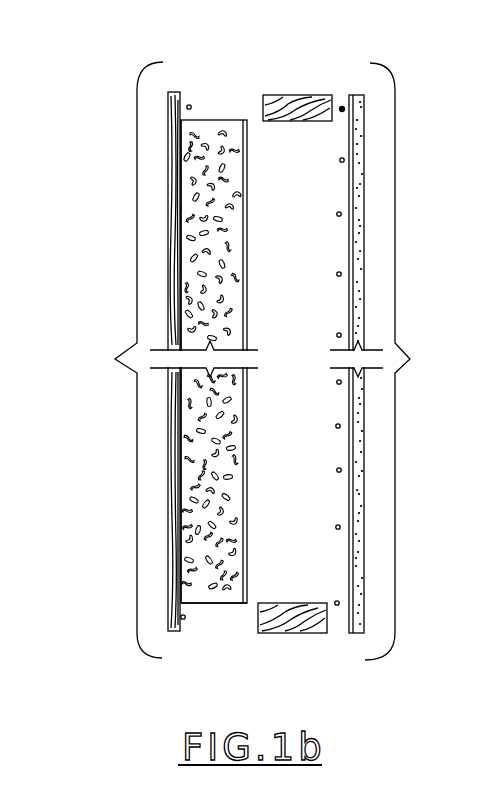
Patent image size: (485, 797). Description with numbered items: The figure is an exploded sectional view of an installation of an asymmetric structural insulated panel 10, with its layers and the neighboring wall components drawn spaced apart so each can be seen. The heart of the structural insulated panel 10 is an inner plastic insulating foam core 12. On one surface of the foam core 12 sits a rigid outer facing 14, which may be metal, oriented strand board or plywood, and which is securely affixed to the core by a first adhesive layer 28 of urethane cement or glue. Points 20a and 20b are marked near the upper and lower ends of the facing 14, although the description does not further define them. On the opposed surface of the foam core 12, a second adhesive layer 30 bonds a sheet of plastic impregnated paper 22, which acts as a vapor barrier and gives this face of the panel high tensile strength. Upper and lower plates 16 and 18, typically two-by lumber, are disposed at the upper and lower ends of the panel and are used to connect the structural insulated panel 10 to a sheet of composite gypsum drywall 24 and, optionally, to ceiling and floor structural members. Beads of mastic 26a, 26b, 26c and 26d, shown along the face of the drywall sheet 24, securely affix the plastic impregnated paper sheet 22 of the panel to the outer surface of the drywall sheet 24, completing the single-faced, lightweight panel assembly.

The asymmetric structural insulated panel 10 is at (117, 383).
The plastic insulating foam core 12 is at (225, 120).
The rigid outer facing 14 is at (176, 92).
The upper plate 16 is at (298, 103).
The lower plate 18 is at (300, 618).
The upper edge point of skin layer 20a is at (192, 105).
The lower edge point of skin layer 20b is at (183, 620).
The plastic impregnated paper sheet 22 is at (244, 302).
The composite gypsum drywall sheet 24 is at (360, 95).
The bead of mastic 26a is at (339, 112).
The bead of mastic 26b is at (336, 273).
The bead of mastic 26c is at (335, 427).
The bead of mastic 26d is at (334, 601).
The first adhesive layer 28 is at (182, 313).
The second adhesive layer 30 is at (238, 592).